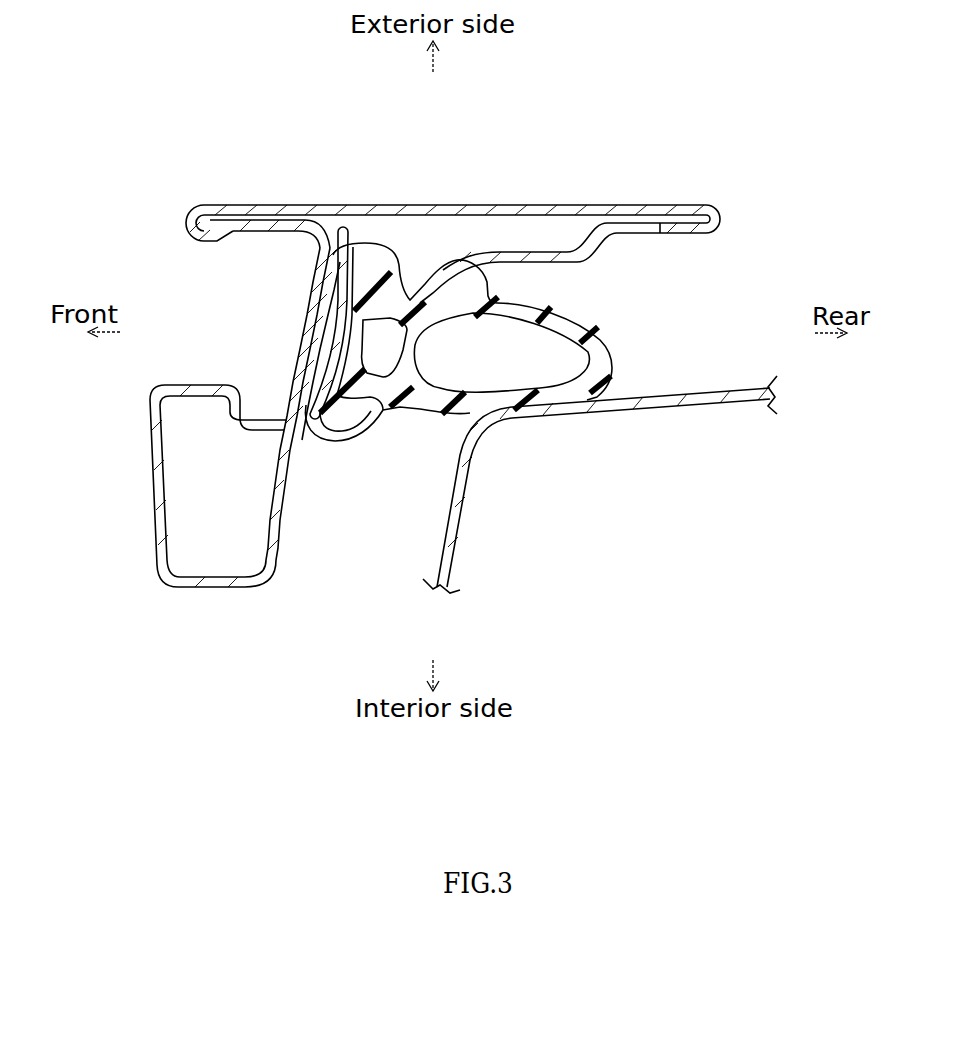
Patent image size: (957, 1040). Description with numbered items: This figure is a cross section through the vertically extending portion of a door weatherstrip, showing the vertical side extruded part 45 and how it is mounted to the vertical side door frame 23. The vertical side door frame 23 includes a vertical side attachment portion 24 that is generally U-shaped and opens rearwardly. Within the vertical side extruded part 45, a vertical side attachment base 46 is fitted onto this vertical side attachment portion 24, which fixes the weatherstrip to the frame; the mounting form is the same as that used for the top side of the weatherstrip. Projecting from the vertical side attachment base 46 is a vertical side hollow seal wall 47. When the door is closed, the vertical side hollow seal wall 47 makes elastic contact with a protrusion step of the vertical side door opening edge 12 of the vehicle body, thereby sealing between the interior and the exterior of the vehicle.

The vertical side door opening edge 12 is at (703, 403).
The vertical side door frame 23 is at (410, 205).
The vertical side attachment portion 24 is at (345, 300).
The vertical side extruded part 45 is at (513, 365).
The vertical side attachment base 46 is at (330, 372).
The vertical side hollow seal wall 47 is at (563, 387).